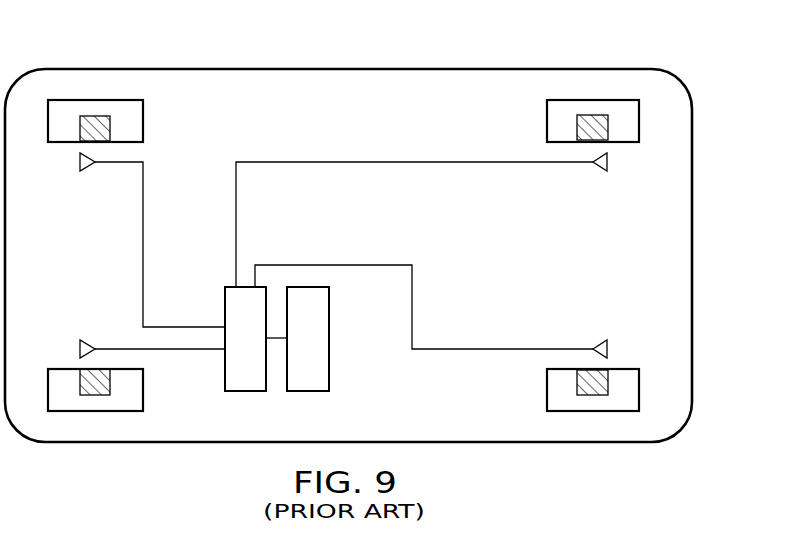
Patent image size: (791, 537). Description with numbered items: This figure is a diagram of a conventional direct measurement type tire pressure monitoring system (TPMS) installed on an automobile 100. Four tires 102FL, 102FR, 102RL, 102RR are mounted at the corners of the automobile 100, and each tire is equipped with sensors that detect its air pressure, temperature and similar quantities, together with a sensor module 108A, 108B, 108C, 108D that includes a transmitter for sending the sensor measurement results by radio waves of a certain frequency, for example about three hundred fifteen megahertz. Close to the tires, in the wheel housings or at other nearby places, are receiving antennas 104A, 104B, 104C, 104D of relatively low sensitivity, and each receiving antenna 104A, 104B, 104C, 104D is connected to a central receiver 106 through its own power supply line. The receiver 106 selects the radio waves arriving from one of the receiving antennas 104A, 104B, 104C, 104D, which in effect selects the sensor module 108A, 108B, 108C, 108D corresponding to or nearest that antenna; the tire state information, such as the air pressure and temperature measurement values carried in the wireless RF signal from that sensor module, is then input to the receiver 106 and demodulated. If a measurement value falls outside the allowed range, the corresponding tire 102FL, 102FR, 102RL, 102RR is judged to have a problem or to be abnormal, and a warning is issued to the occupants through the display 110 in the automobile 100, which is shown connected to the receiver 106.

The automobile 100 is at (270, 66).
The tire 102FR is at (150, 106).
The tire 102RR is at (538, 106).
The tire 102FL is at (152, 402).
The tire 102RL is at (537, 402).
The receiving antenna 104A is at (82, 343).
The receiving antenna 104B is at (83, 169).
The receiving antenna 104C is at (605, 343).
The receiving antenna 104D is at (605, 169).
The receiver 106 is at (224, 370).
The sensor module 108A is at (85, 380).
The sensor module 108B is at (86, 122).
The sensor module 108C is at (612, 383).
The sensor module 108D is at (612, 120).
The display 110 is at (329, 358).